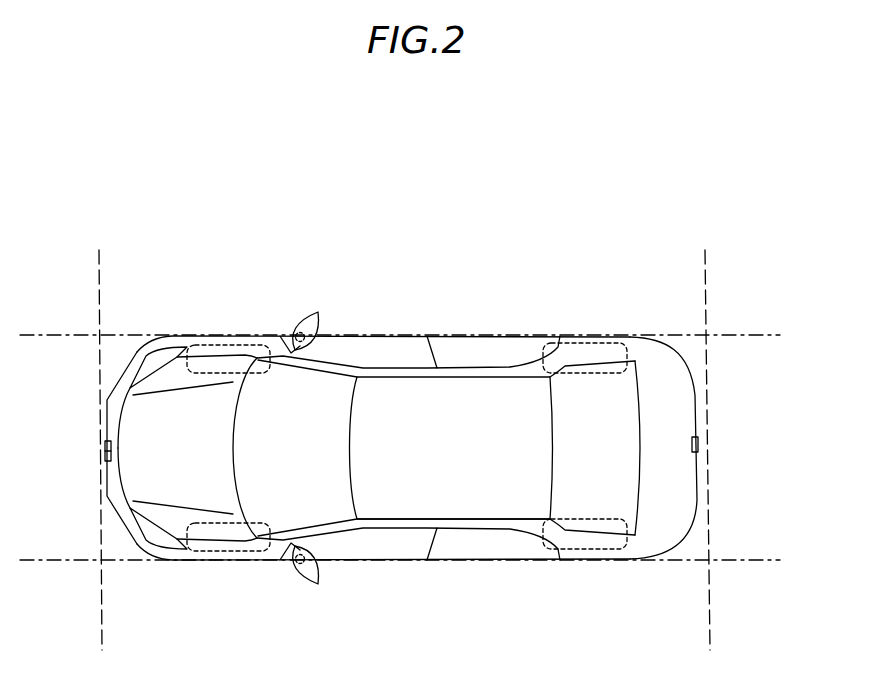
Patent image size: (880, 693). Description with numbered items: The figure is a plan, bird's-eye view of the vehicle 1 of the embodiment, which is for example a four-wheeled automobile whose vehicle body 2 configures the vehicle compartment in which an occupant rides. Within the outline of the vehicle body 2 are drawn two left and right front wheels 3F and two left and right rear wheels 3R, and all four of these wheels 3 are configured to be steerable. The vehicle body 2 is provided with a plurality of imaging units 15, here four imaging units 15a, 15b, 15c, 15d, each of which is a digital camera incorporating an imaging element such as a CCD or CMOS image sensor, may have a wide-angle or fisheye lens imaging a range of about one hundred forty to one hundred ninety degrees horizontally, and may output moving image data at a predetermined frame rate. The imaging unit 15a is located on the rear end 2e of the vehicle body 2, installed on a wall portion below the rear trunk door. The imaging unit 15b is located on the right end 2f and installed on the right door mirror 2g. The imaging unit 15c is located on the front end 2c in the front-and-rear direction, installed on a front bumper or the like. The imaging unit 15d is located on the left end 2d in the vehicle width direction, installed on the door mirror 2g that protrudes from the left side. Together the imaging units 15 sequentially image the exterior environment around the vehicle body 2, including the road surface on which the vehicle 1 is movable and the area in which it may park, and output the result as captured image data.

The vehicle 1 is at (503, 261).
The vehicle body 2 is at (647, 336).
The front end 2c is at (105, 456).
The left end 2d is at (497, 560).
The rear end 2e is at (700, 460).
The right end 2f is at (500, 333).
The door mirror 2g is at (319, 322).
The wheels 3 is at (407, 448).
The front wheels 3F is at (223, 344).
The rear wheels 3R is at (584, 343).
The imaging units 15 is at (412, 464).
The imaging unit 15a is at (700, 443).
The imaging unit 15b is at (299, 331).
The imaging unit 15c is at (105, 446).
The imaging unit 15d is at (304, 566).